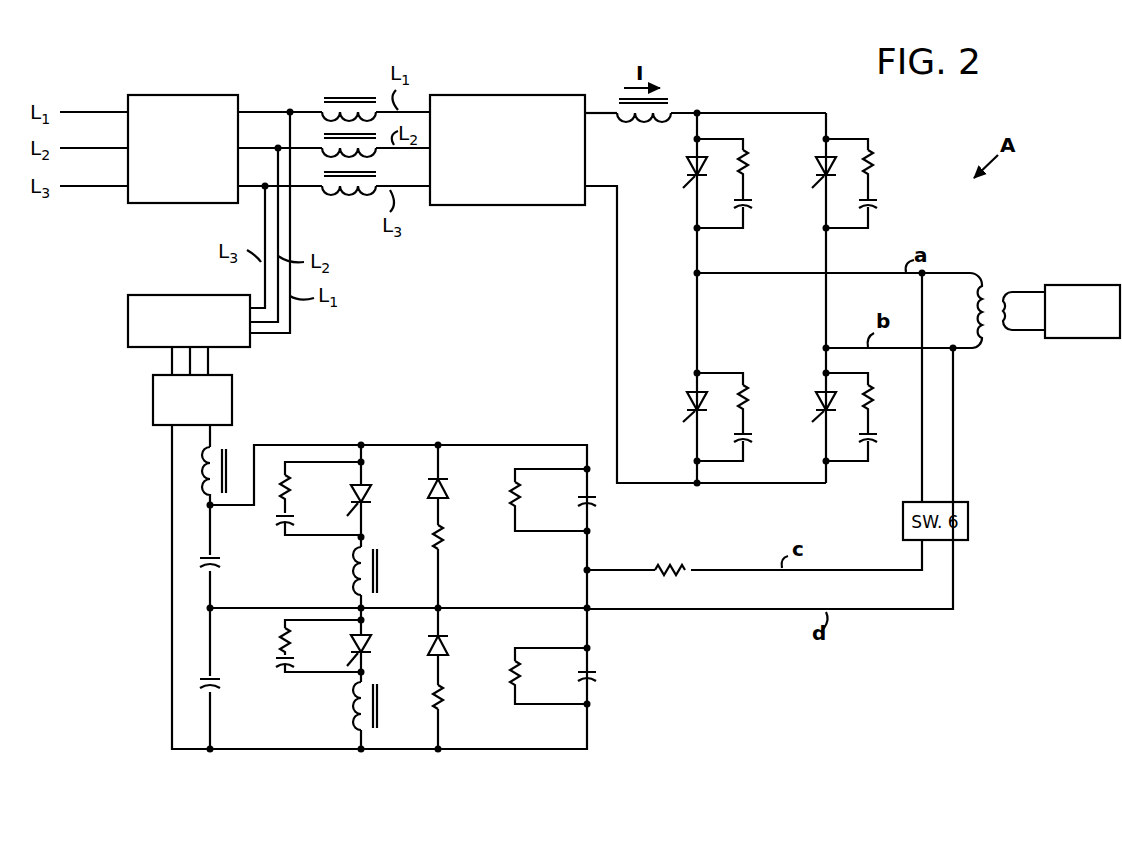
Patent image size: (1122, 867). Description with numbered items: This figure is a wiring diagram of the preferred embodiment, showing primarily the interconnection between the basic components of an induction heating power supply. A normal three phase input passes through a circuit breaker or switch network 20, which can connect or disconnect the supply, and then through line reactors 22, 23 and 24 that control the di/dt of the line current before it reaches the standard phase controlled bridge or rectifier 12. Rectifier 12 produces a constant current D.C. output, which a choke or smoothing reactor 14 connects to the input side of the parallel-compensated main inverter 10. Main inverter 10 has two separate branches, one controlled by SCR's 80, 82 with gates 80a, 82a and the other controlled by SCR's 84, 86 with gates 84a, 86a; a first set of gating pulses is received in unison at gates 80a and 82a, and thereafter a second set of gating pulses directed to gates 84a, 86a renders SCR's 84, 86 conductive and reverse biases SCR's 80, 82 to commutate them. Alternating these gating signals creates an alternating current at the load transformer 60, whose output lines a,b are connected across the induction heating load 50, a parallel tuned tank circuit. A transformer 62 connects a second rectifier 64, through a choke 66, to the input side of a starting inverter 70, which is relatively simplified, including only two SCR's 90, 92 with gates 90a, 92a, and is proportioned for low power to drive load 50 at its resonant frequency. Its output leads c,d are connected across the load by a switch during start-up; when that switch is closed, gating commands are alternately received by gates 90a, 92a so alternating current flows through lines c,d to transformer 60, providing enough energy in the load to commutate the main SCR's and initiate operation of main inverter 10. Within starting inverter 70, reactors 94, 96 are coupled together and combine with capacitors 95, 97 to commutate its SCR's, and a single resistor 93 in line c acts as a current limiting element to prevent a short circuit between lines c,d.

The parallel-compensated inverter 10 is at (771, 273).
The phase controlled rectifier 12 is at (548, 94).
The smoothing reactor 14 is at (648, 122).
The switch network 20 is at (197, 95).
The line reactor 22 is at (339, 96).
The line reactor 23 is at (318, 140).
The line reactor 24 is at (351, 198).
The induction heating load 50 is at (1076, 284).
The load transformer 60 is at (990, 281).
The transformer 62 is at (240, 339).
The second rectifier 64 is at (232, 403).
The choke 66 is at (234, 458).
The starting inverter 70 is at (430, 436).
The SCR 80 is at (711, 164).
The gate of SCR 80 80a is at (692, 194).
The SCR 82 is at (817, 398).
The gate of SCR 82 82a is at (818, 419).
The SCR 84 is at (841, 162).
The gate of SCR 84 84a is at (820, 188).
The SCR 86 is at (705, 398).
The gate of SCR 86 86a is at (687, 414).
The SCR 90 is at (364, 502).
The gate of SCR 90 90a is at (346, 510).
The SCR 92 is at (364, 638).
The gate of SCR 92 92a is at (346, 660).
The resistor 93 is at (678, 564).
The reactor 94 is at (382, 558).
The capacitor 95 is at (225, 564).
The reactor 96 is at (382, 700).
The capacitor 97 is at (220, 688).